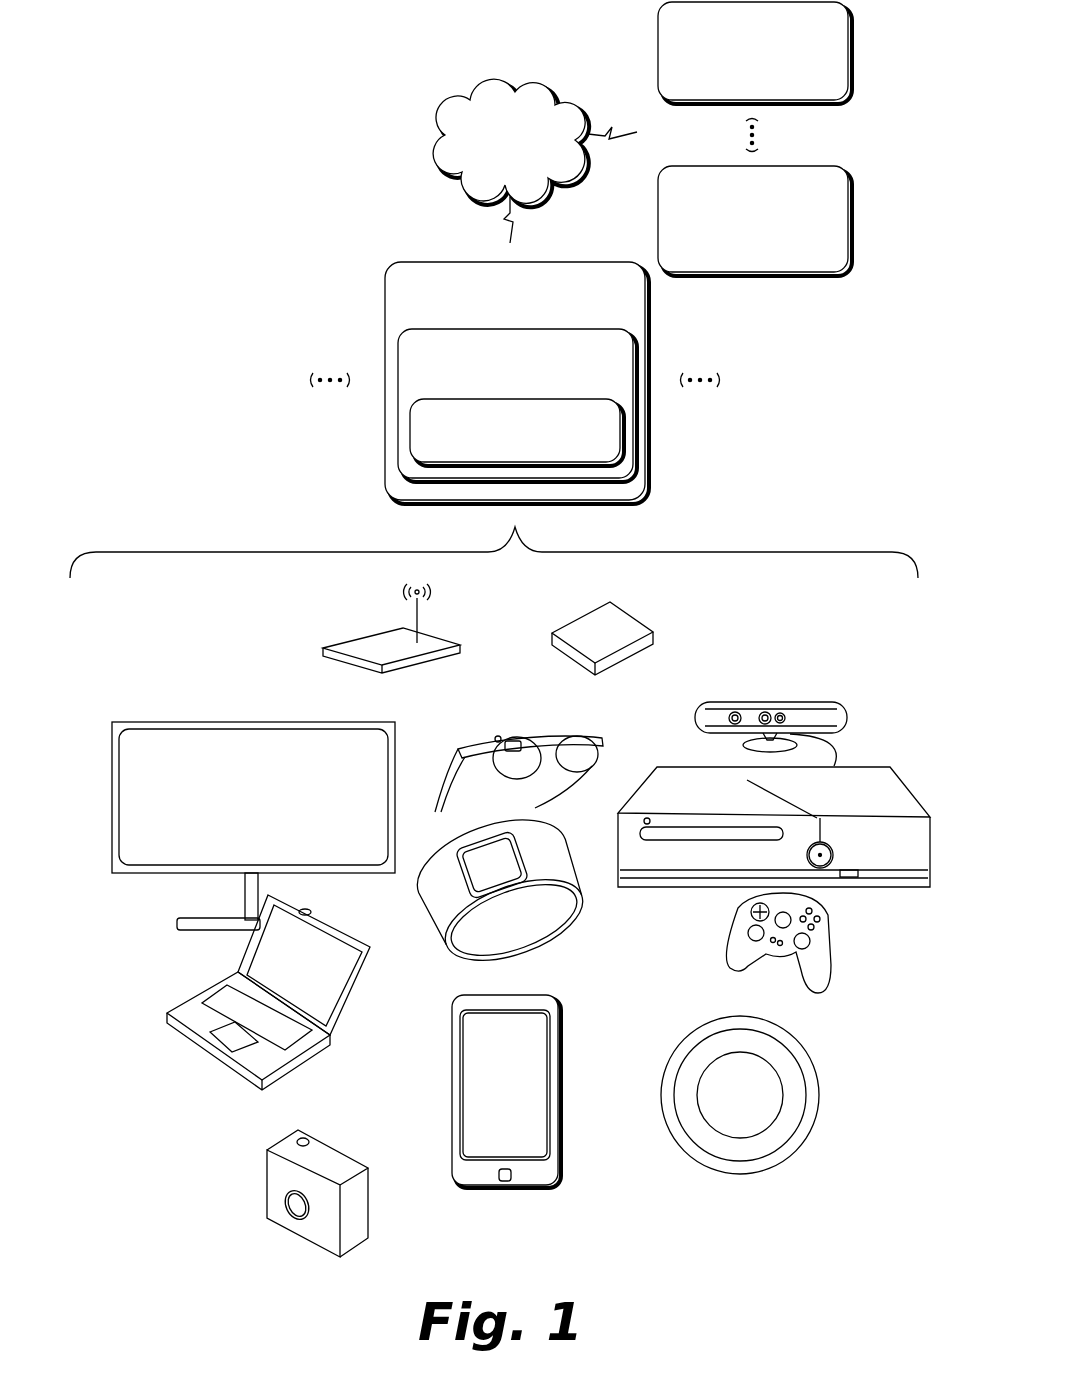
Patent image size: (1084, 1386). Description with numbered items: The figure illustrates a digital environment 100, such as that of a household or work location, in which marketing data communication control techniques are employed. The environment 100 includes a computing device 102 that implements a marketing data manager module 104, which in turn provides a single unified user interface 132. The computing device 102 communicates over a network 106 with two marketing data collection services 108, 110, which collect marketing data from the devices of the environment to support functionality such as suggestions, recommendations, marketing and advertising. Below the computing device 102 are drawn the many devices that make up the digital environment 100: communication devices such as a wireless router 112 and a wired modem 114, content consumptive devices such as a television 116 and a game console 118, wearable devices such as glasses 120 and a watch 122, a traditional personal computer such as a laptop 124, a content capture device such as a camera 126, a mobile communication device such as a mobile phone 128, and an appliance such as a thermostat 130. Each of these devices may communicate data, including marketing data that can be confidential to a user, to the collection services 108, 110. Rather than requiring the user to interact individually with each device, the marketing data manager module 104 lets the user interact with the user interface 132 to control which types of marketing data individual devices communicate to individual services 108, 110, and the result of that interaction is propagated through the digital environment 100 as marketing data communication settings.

The digital environment 100 is at (224, 84).
The computing device 102 is at (517, 383).
The marketing data manager module 104 is at (517, 405).
The network 106 is at (535, 161).
The marketing data collection service 108 is at (755, 53).
The marketing data collection service 110 is at (755, 221).
The wireless router 112 is at (437, 634).
The wired modem 114 is at (637, 613).
The television 116 is at (170, 726).
The game console 118 is at (835, 880).
The glasses 120 is at (510, 733).
The watch 122 is at (523, 947).
The laptop 124 is at (222, 1063).
The camera 126 is at (328, 1143).
The mobile phone 128 is at (563, 1060).
The thermostat 130 is at (810, 1075).
The user interface 132 is at (517, 432).